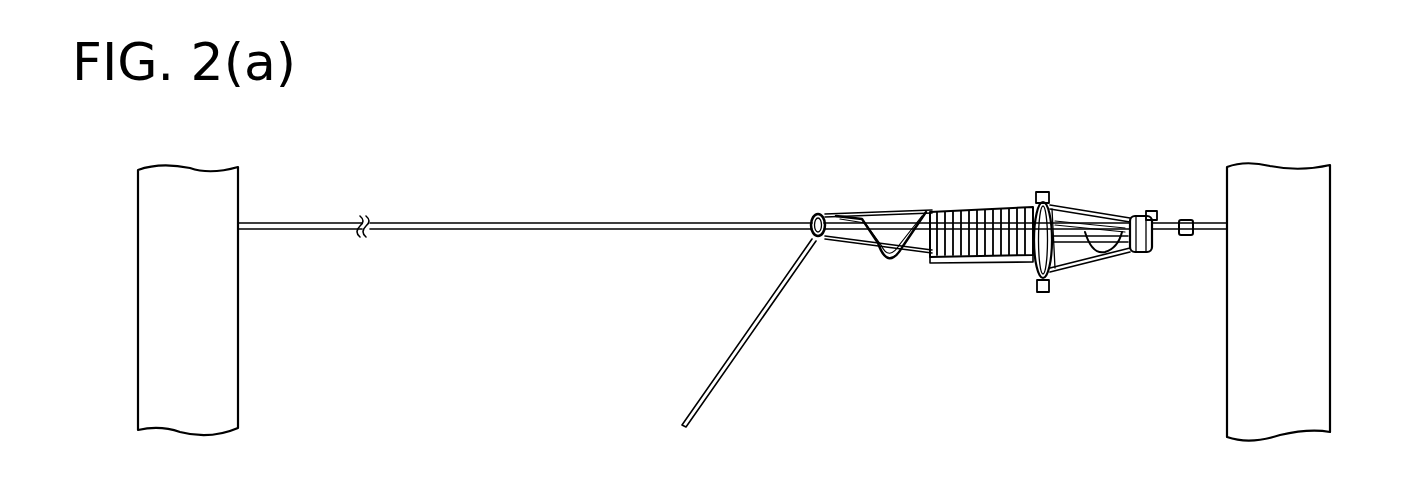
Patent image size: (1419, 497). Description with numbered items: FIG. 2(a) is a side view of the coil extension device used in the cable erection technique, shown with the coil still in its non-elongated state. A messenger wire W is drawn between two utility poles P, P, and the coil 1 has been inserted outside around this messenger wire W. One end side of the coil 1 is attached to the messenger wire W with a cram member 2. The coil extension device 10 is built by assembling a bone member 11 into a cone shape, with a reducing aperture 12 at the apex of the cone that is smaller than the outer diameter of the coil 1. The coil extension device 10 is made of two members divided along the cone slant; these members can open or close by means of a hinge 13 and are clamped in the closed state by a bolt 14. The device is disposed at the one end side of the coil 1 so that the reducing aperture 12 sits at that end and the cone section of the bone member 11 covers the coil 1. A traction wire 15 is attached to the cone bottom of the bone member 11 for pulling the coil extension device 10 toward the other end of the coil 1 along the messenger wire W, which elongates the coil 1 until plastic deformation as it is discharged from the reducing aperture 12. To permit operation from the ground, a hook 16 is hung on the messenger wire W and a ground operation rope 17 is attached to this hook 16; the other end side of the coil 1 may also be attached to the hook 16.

The messenger wire W is at (443, 222).
The utility pole P is at (238, 358).
The coil 1 is at (938, 268).
The cram member 2 is at (1183, 237).
The coil extension device 10 is at (1068, 206).
The bone member 11 is at (1099, 216).
The reducing aperture 12 is at (1148, 254).
The hinge 13 is at (1040, 192).
The bolt 14 is at (1041, 294).
The traction wire 15 is at (904, 212).
The hook 16 is at (816, 214).
The ground operation rope 17 is at (741, 343).